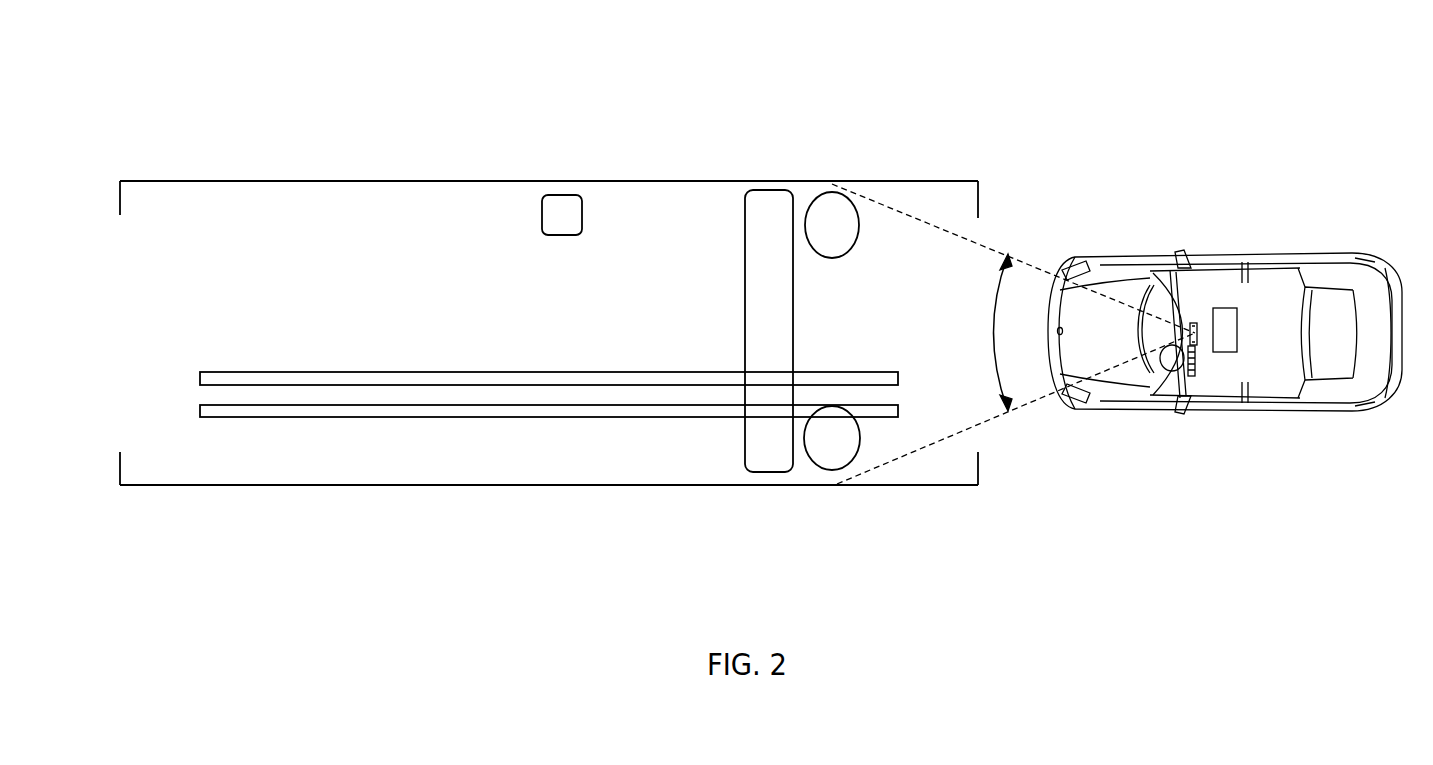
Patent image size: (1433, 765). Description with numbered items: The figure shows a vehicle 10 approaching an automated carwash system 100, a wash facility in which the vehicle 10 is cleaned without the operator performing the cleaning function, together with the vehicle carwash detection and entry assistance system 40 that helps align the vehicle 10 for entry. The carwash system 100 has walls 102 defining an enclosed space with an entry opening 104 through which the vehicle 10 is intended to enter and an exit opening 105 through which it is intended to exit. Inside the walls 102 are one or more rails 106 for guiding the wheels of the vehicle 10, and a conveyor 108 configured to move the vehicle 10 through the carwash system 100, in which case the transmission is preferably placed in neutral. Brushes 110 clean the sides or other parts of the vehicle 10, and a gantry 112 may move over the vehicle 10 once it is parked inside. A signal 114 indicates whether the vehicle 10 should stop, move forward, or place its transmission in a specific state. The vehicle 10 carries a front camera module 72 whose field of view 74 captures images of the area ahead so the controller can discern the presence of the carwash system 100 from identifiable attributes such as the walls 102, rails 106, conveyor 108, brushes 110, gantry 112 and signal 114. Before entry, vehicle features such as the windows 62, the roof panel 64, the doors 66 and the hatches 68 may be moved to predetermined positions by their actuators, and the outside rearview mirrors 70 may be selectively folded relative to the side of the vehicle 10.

The carwash system 100 is at (426, 158).
The walls 102 is at (686, 182).
The entry opening 104 is at (978, 223).
The exit opening 105 is at (119, 220).
The rails 106 is at (586, 405).
The conveyor 108 is at (389, 395).
The brushes 110 is at (817, 192).
The gantry 112 is at (762, 465).
The signal 114 is at (557, 232).
The vehicle carwash detection and entry assistance system 40 is at (1160, 186).
The vehicle 10 is at (1256, 256).
The windows 62 is at (1212, 270).
The roof panel 64 is at (1228, 352).
The doors 66 is at (1198, 406).
The hatches 68 is at (1088, 348).
The outside rearview mirrors 70 is at (1182, 262).
The front camera module 72 is at (1153, 276).
The field of view 74 is at (993, 322).